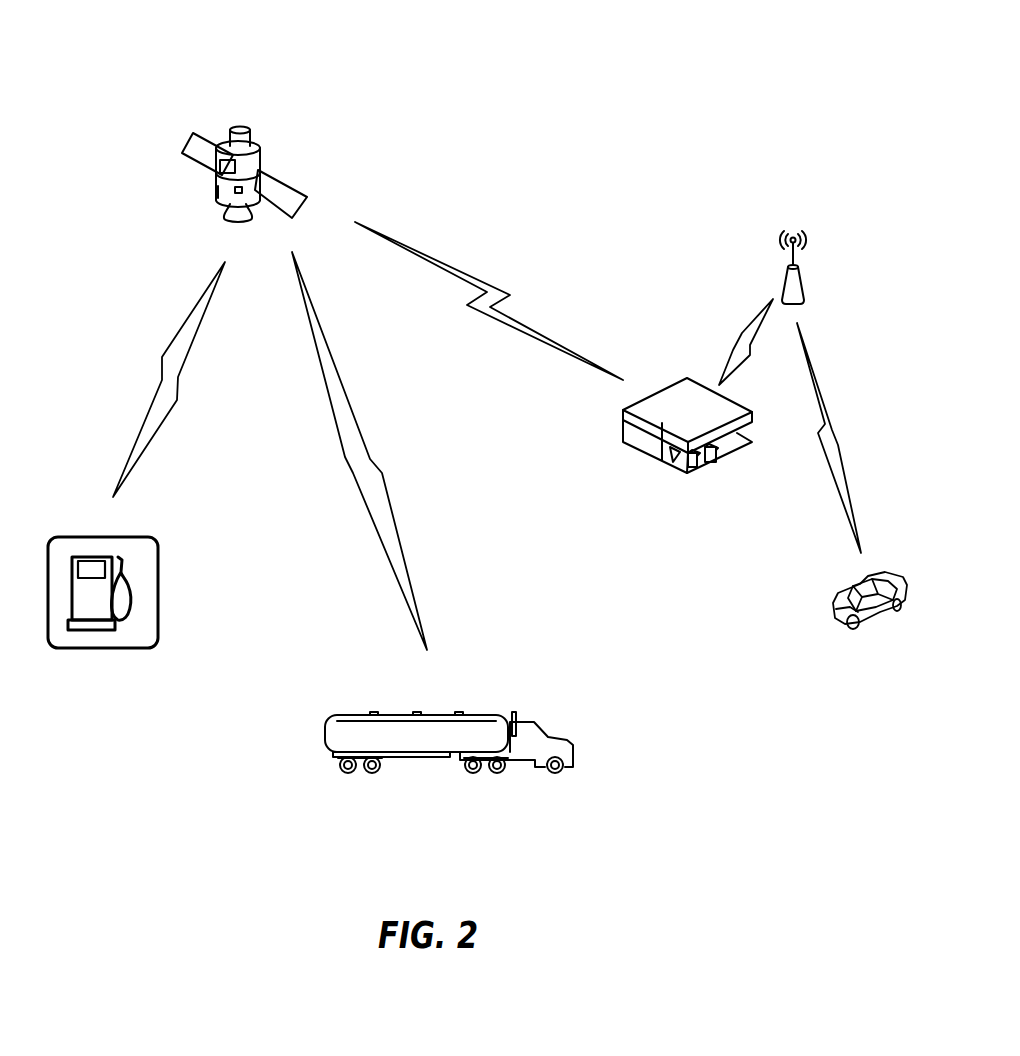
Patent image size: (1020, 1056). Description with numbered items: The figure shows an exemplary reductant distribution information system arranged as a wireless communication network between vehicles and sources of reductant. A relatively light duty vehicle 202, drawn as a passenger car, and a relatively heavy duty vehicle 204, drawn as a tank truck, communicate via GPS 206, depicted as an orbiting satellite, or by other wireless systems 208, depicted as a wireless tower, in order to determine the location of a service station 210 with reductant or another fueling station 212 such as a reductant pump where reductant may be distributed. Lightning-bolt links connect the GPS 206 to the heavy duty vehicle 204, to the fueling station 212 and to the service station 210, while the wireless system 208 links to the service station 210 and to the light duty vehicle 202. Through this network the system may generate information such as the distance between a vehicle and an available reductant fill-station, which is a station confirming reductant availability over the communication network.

The light duty vehicle 202 is at (818, 603).
The heavy duty vehicle 204 is at (418, 790).
The GPS 206 is at (253, 72).
The wireless system 208 is at (792, 188).
The service station 210 is at (688, 568).
The fueling station 212 is at (110, 732).